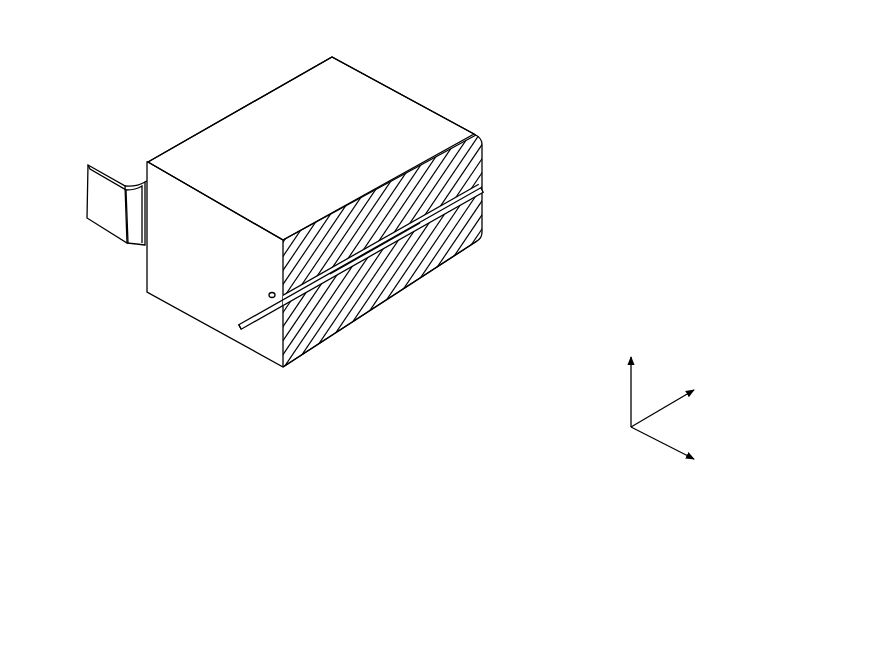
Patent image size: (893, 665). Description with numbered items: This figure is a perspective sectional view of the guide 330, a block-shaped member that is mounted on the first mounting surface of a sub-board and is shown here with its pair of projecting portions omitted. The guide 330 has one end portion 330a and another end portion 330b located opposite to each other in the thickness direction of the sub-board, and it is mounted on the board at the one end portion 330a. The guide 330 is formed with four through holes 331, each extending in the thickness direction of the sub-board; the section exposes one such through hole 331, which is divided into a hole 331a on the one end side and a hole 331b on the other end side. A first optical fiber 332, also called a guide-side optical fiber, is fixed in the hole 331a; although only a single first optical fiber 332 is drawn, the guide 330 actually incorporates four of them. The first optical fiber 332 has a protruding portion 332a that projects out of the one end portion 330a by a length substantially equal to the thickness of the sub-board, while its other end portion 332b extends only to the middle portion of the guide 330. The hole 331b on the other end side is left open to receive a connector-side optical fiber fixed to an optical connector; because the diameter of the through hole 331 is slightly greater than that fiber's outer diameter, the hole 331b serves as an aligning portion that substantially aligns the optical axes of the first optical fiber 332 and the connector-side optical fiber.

The guide 330 is at (420, 75).
The one end portion 330a is at (158, 265).
The another end portion 330b is at (366, 74).
The through hole 331 is at (268, 296).
The hole on one end side 331a is at (291, 299).
The hole on the other end side 331b is at (486, 184).
The first optical fiber 332 is at (226, 336).
The protruding portion 332a is at (250, 331).
The other end portion 332b is at (377, 260).